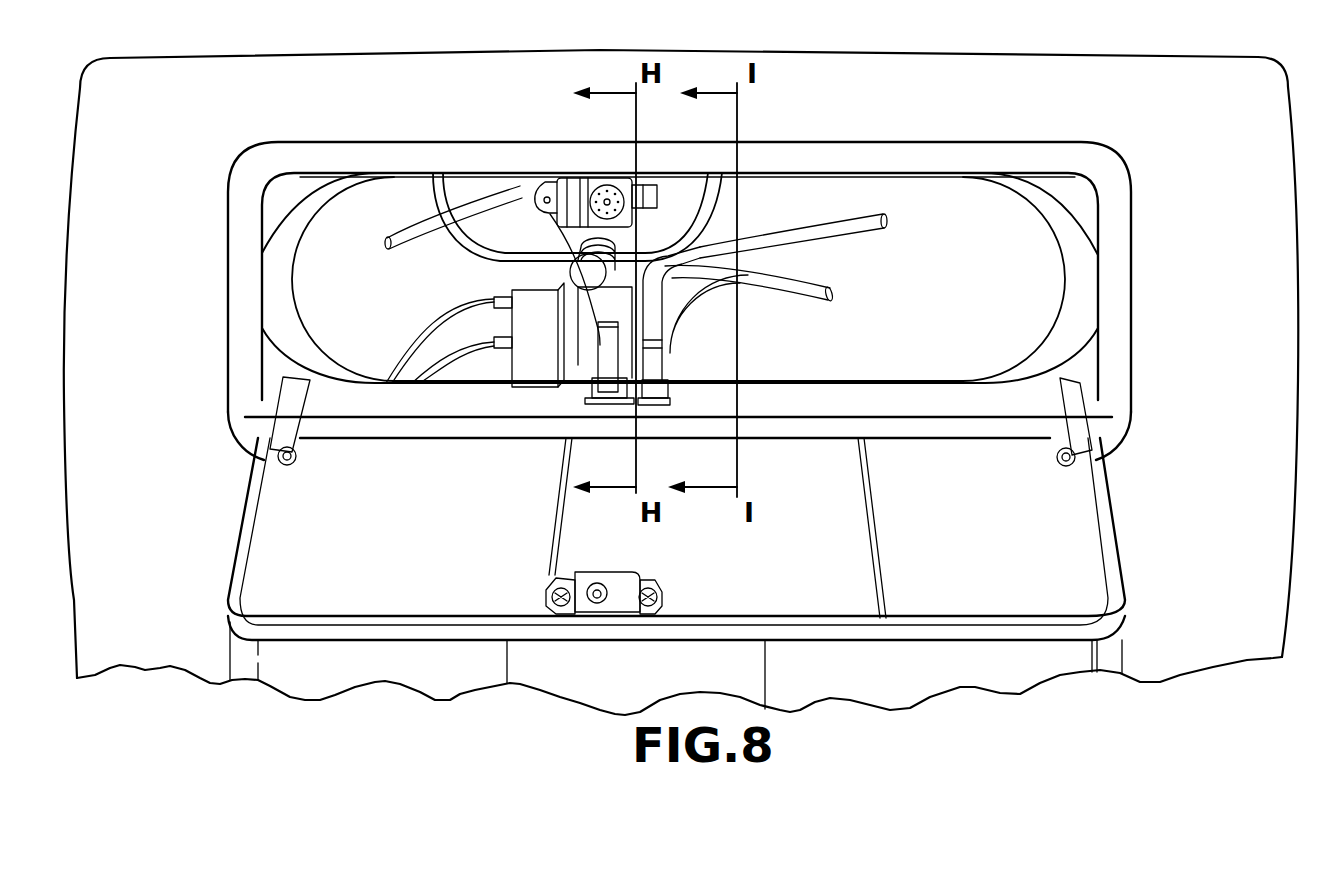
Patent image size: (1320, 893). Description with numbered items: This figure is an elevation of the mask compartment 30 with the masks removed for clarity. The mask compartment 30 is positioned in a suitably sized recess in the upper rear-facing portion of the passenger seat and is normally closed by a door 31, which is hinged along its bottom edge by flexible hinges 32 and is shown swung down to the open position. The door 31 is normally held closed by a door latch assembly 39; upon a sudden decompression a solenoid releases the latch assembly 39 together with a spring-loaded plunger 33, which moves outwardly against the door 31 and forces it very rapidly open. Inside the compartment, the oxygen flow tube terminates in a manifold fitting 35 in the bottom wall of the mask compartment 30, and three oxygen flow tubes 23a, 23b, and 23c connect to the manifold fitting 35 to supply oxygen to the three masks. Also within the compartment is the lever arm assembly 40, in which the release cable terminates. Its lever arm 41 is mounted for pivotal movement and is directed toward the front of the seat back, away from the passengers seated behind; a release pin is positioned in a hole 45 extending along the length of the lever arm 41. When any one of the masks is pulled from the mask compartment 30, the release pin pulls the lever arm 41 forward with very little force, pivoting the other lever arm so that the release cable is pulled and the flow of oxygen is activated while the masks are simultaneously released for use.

The mask compartment 30 is at (1035, 140).
The door 31 is at (1078, 603).
The flexible hinges 32 is at (285, 410).
The spring-loaded plunger 33 is at (553, 180).
The manifold fitting 35 is at (670, 400).
The door latch assembly 39 is at (593, 178).
The lever arm assembly 40 is at (600, 398).
The lever arm 41 is at (607, 348).
The hole 45 is at (585, 262).
The oxygen flow tube 23a is at (835, 240).
The oxygen flow tube 23b is at (810, 282).
The oxygen flow tube 23c is at (728, 245).